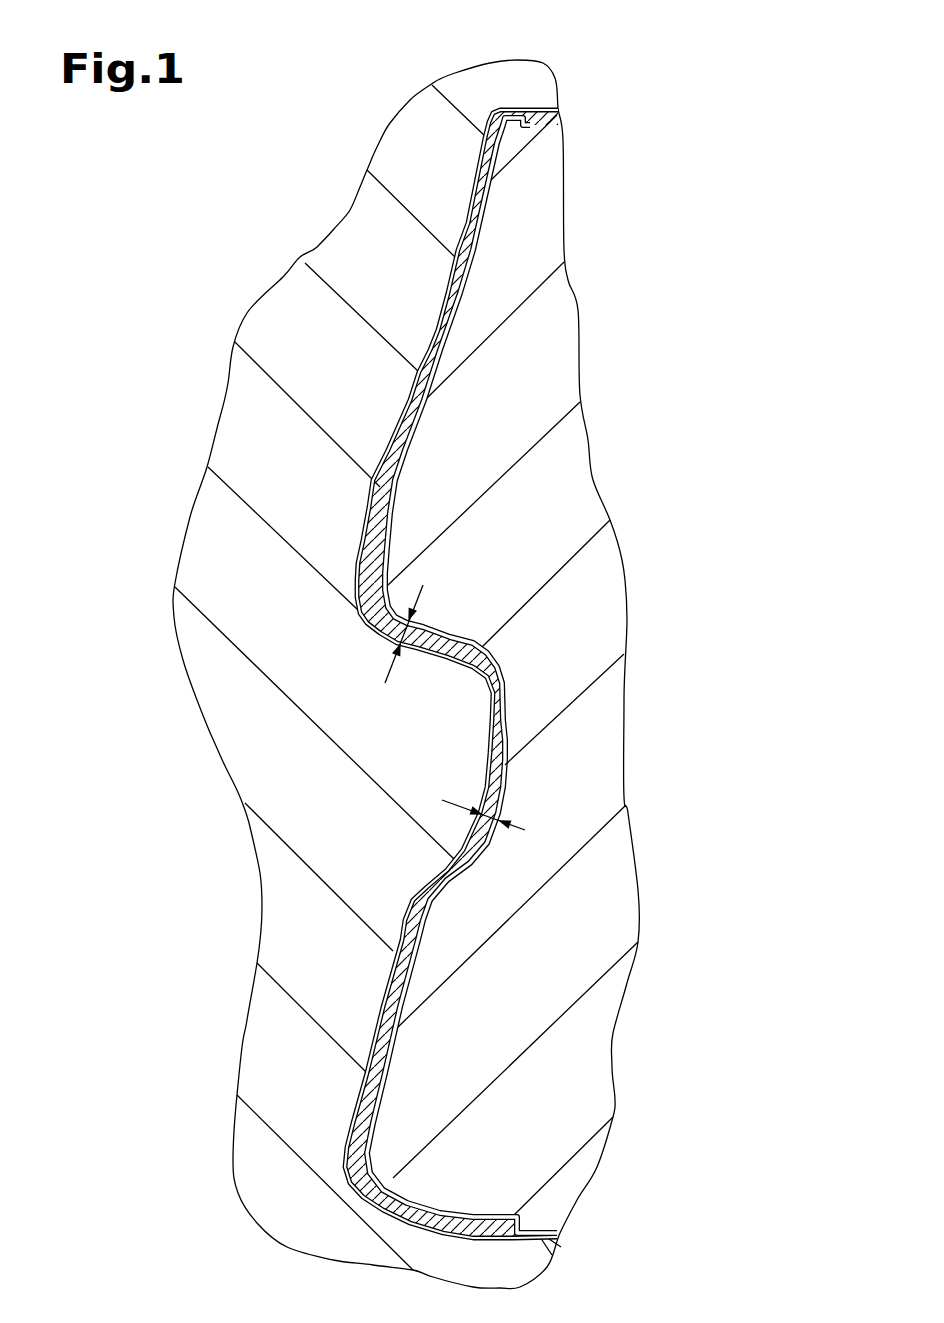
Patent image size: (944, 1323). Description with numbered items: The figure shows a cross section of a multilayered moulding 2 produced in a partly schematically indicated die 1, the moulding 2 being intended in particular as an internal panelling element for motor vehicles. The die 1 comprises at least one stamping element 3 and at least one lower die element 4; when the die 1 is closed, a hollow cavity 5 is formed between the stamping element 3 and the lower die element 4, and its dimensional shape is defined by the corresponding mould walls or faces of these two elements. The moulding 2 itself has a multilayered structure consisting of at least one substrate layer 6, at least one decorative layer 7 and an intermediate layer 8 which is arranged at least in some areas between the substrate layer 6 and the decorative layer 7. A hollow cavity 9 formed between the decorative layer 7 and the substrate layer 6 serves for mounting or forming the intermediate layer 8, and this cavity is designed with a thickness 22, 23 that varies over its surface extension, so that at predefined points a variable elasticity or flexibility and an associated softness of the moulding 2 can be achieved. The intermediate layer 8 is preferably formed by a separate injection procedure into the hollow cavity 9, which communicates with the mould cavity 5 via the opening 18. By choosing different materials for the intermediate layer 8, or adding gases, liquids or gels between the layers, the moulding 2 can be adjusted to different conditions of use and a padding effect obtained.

The die 1 is at (308, 107).
The multilayered moulding 2 is at (458, 223).
The stamping element 3 is at (470, 608).
The lower die element 4 is at (297, 730).
The hollow cavity 5 is at (412, 363).
The substrate layer 6 is at (589, 895).
The decorative layer 7 is at (410, 903).
The intermediate layer 8 is at (382, 1014).
The hollow cavity 9 is at (361, 593).
The opening 18 is at (504, 671).
The thickness 22 is at (419, 596).
The thickness 23 is at (512, 826).